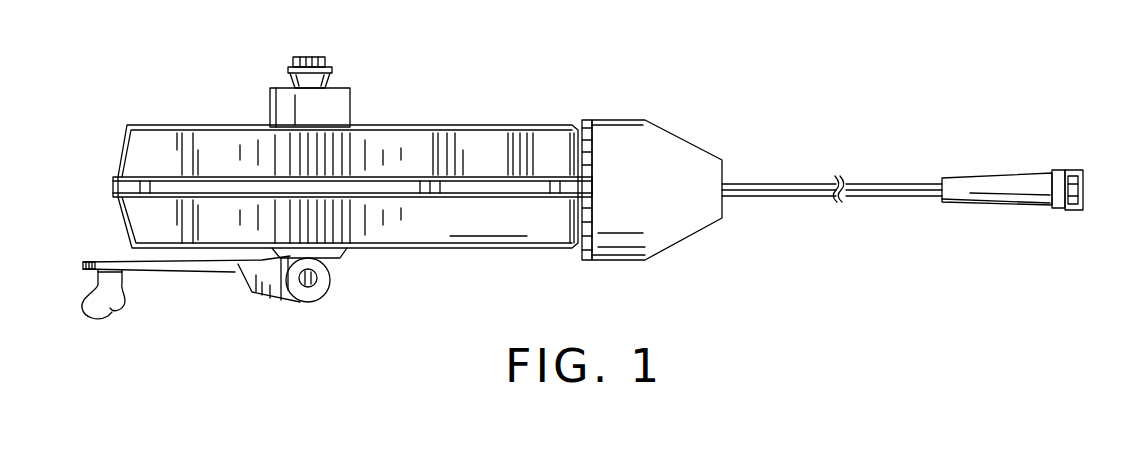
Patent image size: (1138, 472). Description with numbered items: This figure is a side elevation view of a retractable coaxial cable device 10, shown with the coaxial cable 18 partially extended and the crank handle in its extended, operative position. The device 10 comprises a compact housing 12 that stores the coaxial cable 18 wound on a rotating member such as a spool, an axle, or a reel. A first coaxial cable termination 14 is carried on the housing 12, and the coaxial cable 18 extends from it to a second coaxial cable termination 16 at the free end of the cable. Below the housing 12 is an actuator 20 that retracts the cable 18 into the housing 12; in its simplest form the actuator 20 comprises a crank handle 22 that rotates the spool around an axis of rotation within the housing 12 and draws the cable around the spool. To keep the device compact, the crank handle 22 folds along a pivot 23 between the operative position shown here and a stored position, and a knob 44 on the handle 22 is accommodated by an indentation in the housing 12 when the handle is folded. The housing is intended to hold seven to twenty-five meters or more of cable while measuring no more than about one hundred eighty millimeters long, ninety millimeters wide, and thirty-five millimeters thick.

The retractable coaxial cable device 10 is at (560, 72).
The housing 12 is at (443, 227).
The first coaxial cable termination 14 is at (332, 68).
The second coaxial cable termination 16 is at (1063, 212).
The coaxial cable 18 is at (770, 197).
The actuator 20 is at (283, 280).
The crank handle 22 is at (172, 270).
The pivot 23 is at (318, 283).
The knob 44 is at (118, 308).